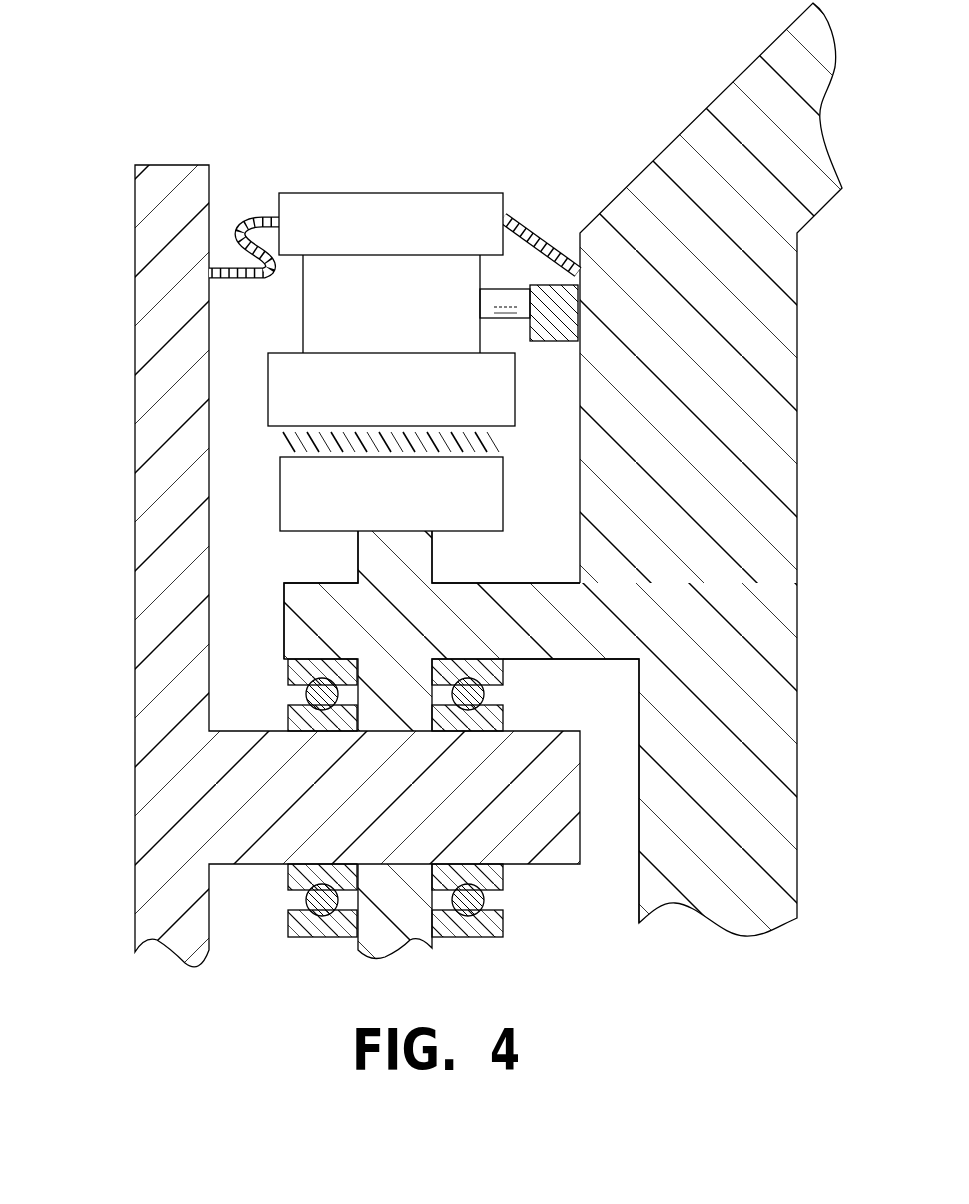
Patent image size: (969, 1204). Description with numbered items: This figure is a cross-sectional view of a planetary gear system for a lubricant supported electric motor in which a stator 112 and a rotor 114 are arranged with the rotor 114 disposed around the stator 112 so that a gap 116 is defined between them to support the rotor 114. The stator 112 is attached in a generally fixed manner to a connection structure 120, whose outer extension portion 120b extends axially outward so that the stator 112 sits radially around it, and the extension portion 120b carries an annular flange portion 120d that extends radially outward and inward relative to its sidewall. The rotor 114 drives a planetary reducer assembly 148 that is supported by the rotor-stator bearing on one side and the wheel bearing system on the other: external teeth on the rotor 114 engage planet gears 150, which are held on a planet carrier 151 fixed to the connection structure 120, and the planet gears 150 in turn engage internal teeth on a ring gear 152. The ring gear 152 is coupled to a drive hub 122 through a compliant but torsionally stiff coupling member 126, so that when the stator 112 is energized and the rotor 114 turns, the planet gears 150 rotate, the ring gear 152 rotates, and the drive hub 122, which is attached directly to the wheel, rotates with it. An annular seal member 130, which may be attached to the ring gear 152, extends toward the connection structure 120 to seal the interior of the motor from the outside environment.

The stator 112 is at (495, 496).
The rotor 114 is at (509, 407).
The gap 116 is at (465, 438).
The connection structure 120 is at (673, 156).
The outer extension portion 120b is at (582, 650).
The flange portion 120d is at (387, 558).
The drive hub 122 is at (142, 499).
The coupling member 126 is at (268, 214).
The seal member 130 is at (540, 232).
The planetary reducer assembly 148 is at (240, 329).
The planet gears 150 is at (456, 294).
The planet carrier 151 is at (558, 316).
The ring gear 152 is at (457, 210).